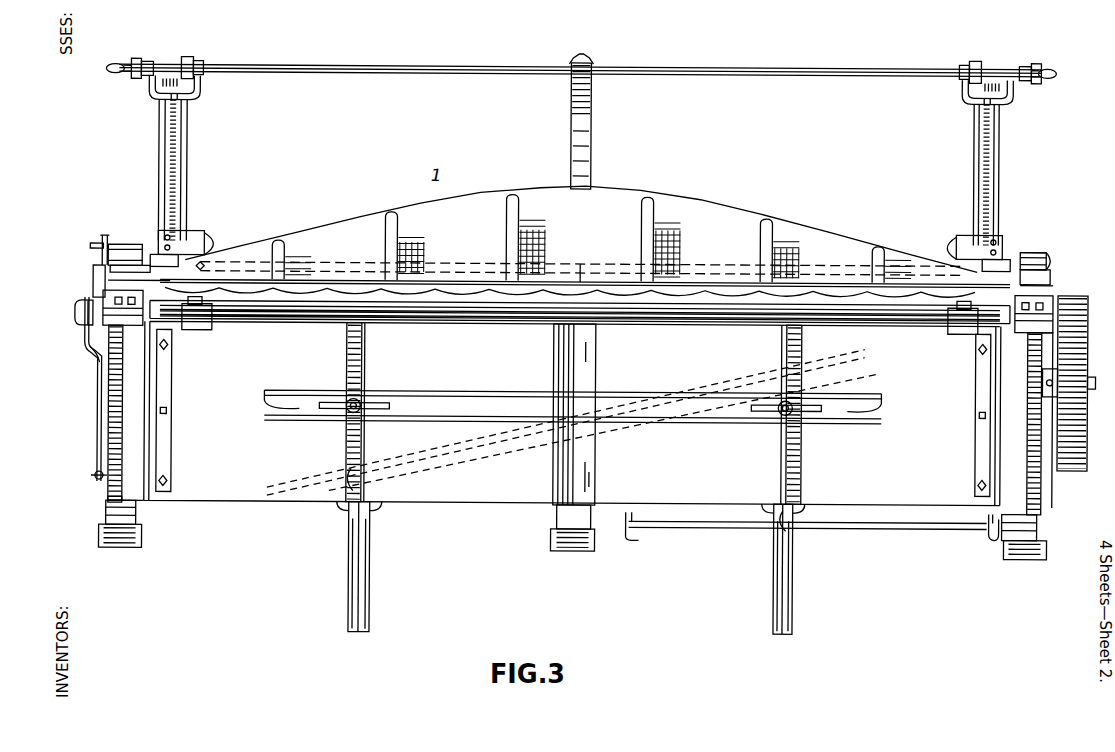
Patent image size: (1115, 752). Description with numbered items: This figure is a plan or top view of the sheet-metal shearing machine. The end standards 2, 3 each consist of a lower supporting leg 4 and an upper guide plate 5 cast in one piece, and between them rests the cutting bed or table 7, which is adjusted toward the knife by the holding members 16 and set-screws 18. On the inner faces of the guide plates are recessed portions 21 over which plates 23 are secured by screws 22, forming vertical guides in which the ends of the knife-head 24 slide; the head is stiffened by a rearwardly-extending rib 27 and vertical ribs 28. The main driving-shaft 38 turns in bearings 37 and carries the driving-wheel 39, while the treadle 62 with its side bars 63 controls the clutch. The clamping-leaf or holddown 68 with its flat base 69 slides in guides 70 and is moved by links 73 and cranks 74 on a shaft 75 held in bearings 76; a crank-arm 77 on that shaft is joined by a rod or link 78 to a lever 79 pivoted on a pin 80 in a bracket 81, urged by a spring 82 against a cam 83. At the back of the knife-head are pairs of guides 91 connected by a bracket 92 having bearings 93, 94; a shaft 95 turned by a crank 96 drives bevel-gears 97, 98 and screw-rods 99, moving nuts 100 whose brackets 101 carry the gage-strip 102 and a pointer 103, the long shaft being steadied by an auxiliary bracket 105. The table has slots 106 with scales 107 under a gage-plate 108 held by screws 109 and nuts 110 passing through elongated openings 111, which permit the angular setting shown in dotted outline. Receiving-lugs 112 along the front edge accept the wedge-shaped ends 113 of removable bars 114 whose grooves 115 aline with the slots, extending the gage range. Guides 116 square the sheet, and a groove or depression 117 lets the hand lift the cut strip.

The end standard 2 is at (107, 511).
The end standard 3 is at (1040, 375).
The supporting leg 4 is at (143, 537).
The guide plate 5 is at (123, 376).
The cutting bed or table 7 is at (573, 425).
The holding member 16 is at (134, 499).
The set-screw 18 is at (137, 515).
The recessed portion 21 is at (108, 285).
The screw or bolt 22 is at (132, 247).
The plate 23 is at (138, 268).
The knife-head 24 is at (598, 275).
The rearwardly-extending rib 27 is at (356, 262).
The vertically-arranged ribs 28 is at (285, 246).
The bearings 37 is at (1043, 390).
The main driving-shaft 38 is at (1092, 387).
The driving-wheel 39 is at (1073, 468).
The treadle 62 is at (684, 529).
The side bars 63 is at (627, 521).
The clamping-leaf or holddown 68 is at (566, 303).
The flat base 69 is at (430, 282).
The guides 70 is at (326, 295).
The links 73 is at (204, 304).
The cranks 74 is at (194, 332).
The shaft 75 is at (506, 325).
The bearings 76 is at (130, 328).
The crank-arm 77 is at (78, 330).
The rod or link 78 is at (92, 360).
The lever 79 is at (100, 260).
The pin 80 is at (88, 249).
The bracket 81 is at (104, 238).
The spring 82 is at (96, 481).
The cam 83 is at (93, 282).
The rearwardly-extending guides 91 is at (158, 152).
The bracket 92 is at (196, 97).
The bearings 93 is at (144, 64).
The bearings 94 is at (178, 101).
The shaft 95 is at (165, 63).
The crank 96 is at (122, 77).
The bevel-gears 97 is at (186, 59).
The bevel-gears 98 is at (158, 95).
The screw-rods 99 is at (176, 177).
The block or nut 100 is at (154, 258).
The brackets 101 is at (204, 238).
The gage-strip 102 is at (246, 263).
The pointer 103 is at (214, 248).
The auxiliary bracket 105 is at (590, 149).
The slots 106 is at (366, 351).
The scales 107 is at (347, 377).
The gage-plate 108 is at (304, 422).
The screws 109 is at (360, 400).
The nuts 110 is at (360, 414).
The openings 111 is at (332, 412).
The receiving-lugs 112 is at (338, 507).
The wedge-shaped ends 113 is at (366, 485).
The bars 114 is at (371, 553).
The grooves or slots 115 is at (350, 616).
The guides 116 is at (172, 426).
The groove or depression 117 is at (590, 342).